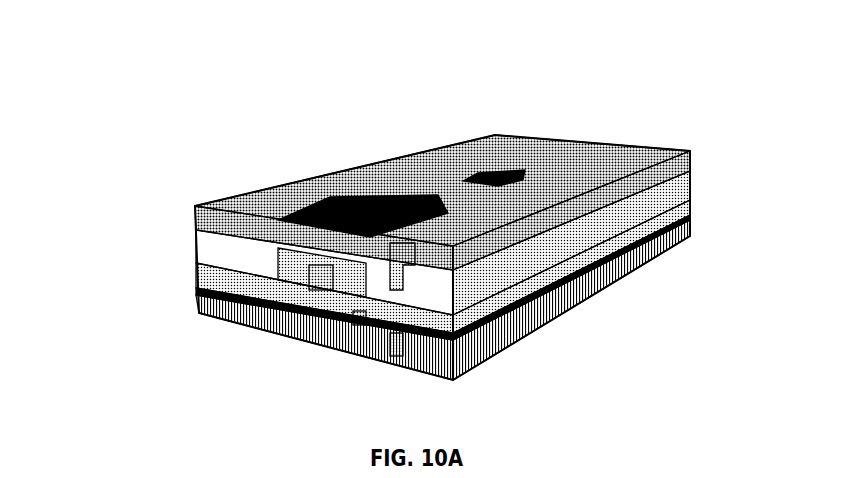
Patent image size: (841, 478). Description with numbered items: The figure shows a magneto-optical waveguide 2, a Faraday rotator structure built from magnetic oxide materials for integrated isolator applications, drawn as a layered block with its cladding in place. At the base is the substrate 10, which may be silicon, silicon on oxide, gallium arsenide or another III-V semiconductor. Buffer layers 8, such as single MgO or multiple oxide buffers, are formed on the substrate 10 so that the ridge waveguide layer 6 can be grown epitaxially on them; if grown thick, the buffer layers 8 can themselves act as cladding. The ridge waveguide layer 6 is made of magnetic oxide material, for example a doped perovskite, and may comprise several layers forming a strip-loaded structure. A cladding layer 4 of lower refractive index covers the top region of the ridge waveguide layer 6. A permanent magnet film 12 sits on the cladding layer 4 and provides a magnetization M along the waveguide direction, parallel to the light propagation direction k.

The magneto-optical waveguide 2 is at (383, 230).
The permanent magnet film 12 is at (227, 208).
The cladding layer 4 is at (213, 245).
The ridge waveguide layer 6 is at (287, 271).
The substrate 10 is at (277, 293).
The buffer layers 8 is at (335, 328).